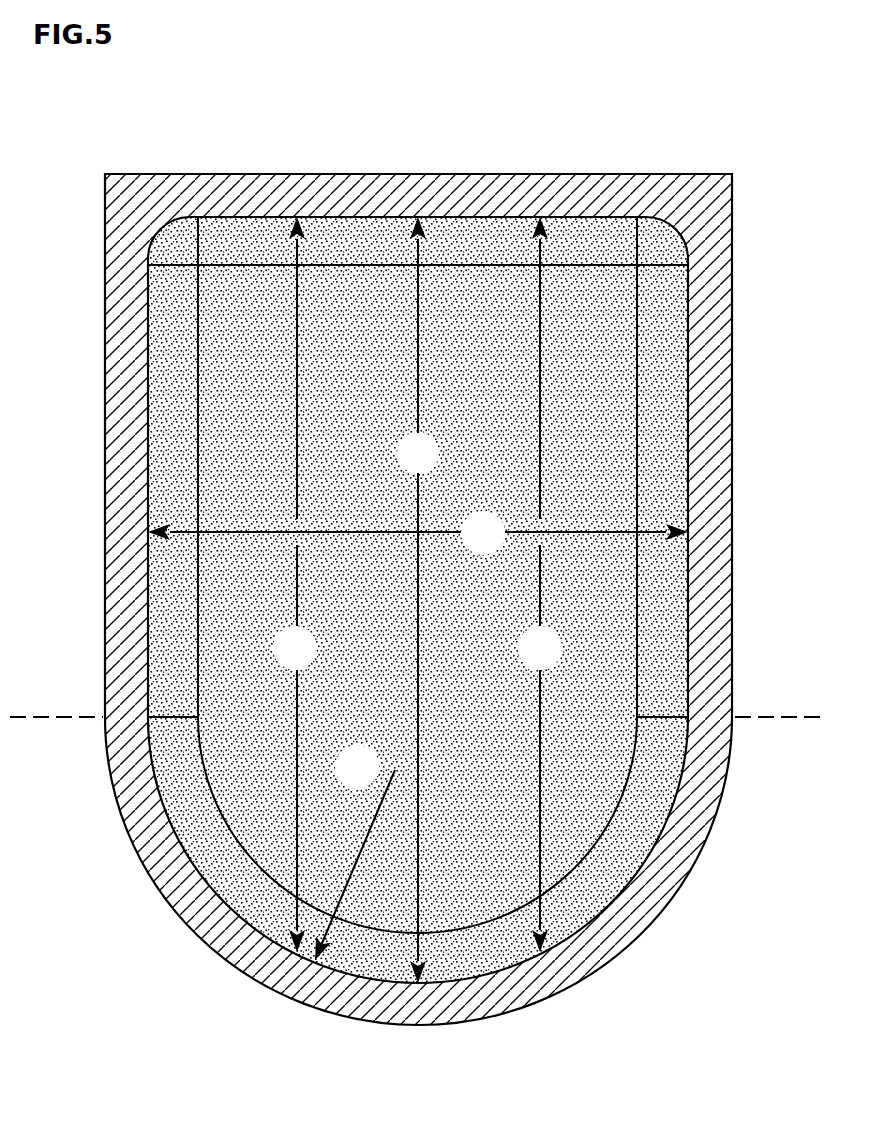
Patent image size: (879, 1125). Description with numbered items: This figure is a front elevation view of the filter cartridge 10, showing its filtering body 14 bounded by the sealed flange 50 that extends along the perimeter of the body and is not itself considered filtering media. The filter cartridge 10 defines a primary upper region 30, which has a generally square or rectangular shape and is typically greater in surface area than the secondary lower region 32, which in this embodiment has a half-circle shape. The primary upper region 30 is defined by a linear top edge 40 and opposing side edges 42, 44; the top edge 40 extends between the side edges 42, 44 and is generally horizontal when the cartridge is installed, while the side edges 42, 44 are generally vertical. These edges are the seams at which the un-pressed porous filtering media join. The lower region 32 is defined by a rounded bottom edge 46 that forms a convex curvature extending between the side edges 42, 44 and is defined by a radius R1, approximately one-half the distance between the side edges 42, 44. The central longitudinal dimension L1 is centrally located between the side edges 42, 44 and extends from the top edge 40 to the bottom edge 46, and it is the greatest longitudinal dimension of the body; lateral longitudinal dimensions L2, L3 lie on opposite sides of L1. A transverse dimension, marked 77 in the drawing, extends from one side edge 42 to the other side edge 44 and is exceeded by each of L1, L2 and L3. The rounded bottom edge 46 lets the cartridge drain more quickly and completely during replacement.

The filter cartridge 10 is at (190, 142).
The filtering body 14 is at (615, 399).
The primary upper region 30 is at (70, 618).
The secondary lower region 32 is at (70, 813).
The top edge 40 is at (358, 217).
The side edge 42 is at (148, 438).
The side edge 44 is at (686, 498).
The bottom edge 46 is at (340, 975).
The sealed flange 50 is at (508, 188).
The width dimension 77 is at (418, 533).
The central longitudinal dimension L1 is at (417, 600).
The lateral longitudinal dimension L2 is at (294, 584).
The lateral longitudinal dimension L3 is at (539, 584).
The radius R1 is at (351, 857).